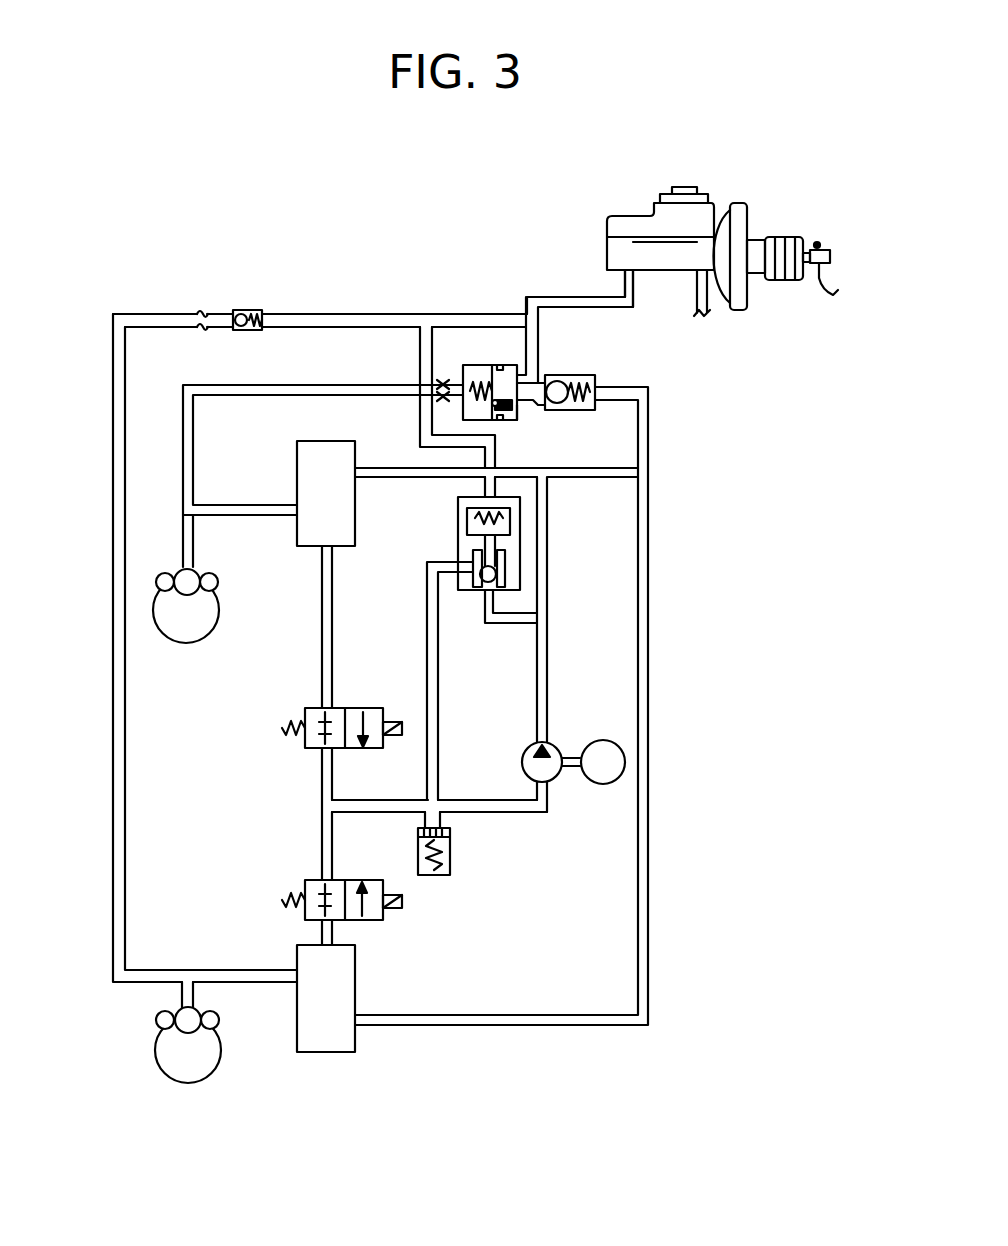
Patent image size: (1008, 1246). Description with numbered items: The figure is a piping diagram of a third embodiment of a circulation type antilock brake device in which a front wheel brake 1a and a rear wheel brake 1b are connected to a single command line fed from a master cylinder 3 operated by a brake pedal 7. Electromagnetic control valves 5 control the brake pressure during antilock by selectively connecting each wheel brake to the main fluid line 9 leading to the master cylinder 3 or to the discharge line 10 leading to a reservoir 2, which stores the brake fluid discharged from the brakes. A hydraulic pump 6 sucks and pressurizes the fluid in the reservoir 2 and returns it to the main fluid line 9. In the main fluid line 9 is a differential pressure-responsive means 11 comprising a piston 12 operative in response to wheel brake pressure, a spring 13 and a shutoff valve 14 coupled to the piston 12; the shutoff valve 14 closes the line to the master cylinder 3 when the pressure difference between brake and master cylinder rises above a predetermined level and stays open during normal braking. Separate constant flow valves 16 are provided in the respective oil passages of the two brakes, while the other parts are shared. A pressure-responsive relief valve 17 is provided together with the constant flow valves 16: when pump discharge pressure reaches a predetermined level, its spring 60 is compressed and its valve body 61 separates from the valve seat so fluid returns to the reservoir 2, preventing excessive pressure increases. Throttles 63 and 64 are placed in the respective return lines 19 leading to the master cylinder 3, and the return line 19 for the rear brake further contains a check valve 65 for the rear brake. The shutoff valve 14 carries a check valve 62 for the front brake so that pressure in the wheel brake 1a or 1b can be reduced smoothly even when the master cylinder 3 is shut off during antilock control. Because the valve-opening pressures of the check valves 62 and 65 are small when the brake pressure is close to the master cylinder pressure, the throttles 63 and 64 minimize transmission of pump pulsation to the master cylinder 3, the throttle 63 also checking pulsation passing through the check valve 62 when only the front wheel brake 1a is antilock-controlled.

The front wheel brake 1a is at (173, 640).
The rear wheel brake 1b is at (156, 1053).
The reservoir 2 is at (450, 848).
The master cylinder 3 is at (671, 266).
The electromagnetic control valve 5 is at (305, 708).
The hydraulic pump 6 is at (556, 747).
The brake pedal 7 is at (834, 289).
The main fluid line 9 is at (565, 297).
The discharge line 10 is at (320, 776).
The differential pressure-responsive means 11 is at (458, 362).
The piston 12 is at (518, 421).
The spring 13 is at (463, 400).
The shutoff valve 14 is at (565, 400).
The constant flow valve 16 is at (297, 468).
The pressure-responsive relief valve 17 is at (457, 537).
The return line 19 is at (183, 474).
The spring 60 is at (492, 516).
The valve body 61 is at (496, 573).
The check valve 62 is at (499, 398).
The throttle 63 is at (440, 383).
The throttle 64 is at (203, 314).
The check valve 65 is at (262, 313).